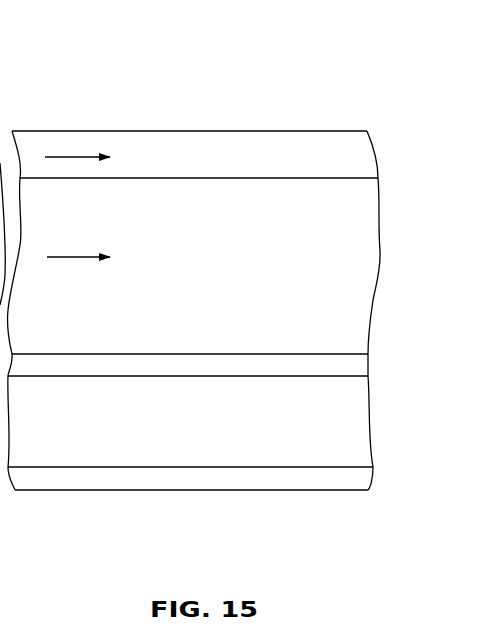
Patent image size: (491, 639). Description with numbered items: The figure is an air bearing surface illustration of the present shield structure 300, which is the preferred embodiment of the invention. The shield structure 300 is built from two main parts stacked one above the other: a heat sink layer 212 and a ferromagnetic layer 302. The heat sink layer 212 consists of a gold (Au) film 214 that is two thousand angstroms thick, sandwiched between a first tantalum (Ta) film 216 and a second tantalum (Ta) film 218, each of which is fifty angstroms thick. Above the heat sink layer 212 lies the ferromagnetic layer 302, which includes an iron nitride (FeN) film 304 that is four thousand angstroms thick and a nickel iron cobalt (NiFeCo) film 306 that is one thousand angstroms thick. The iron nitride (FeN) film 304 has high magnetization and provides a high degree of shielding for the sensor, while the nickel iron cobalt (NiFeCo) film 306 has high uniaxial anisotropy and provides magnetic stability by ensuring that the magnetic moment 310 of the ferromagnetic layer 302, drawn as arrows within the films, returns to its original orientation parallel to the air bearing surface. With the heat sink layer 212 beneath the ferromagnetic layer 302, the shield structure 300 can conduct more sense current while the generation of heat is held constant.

The shield structure 300 is at (287, 93).
The ferromagnetic layer 302 is at (235, 224).
The iron nitride (FeN) film 304 is at (320, 212).
The nickel iron cobalt (NiFeCo) film 306 is at (347, 143).
The magnetic moment 310 is at (65, 257).
The heat sink layer 212 is at (227, 435).
The gold (Au) film 214 is at (110, 442).
The first tantalum (Ta) film 216 is at (68, 482).
The second tantalum (Ta) film 218 is at (42, 368).